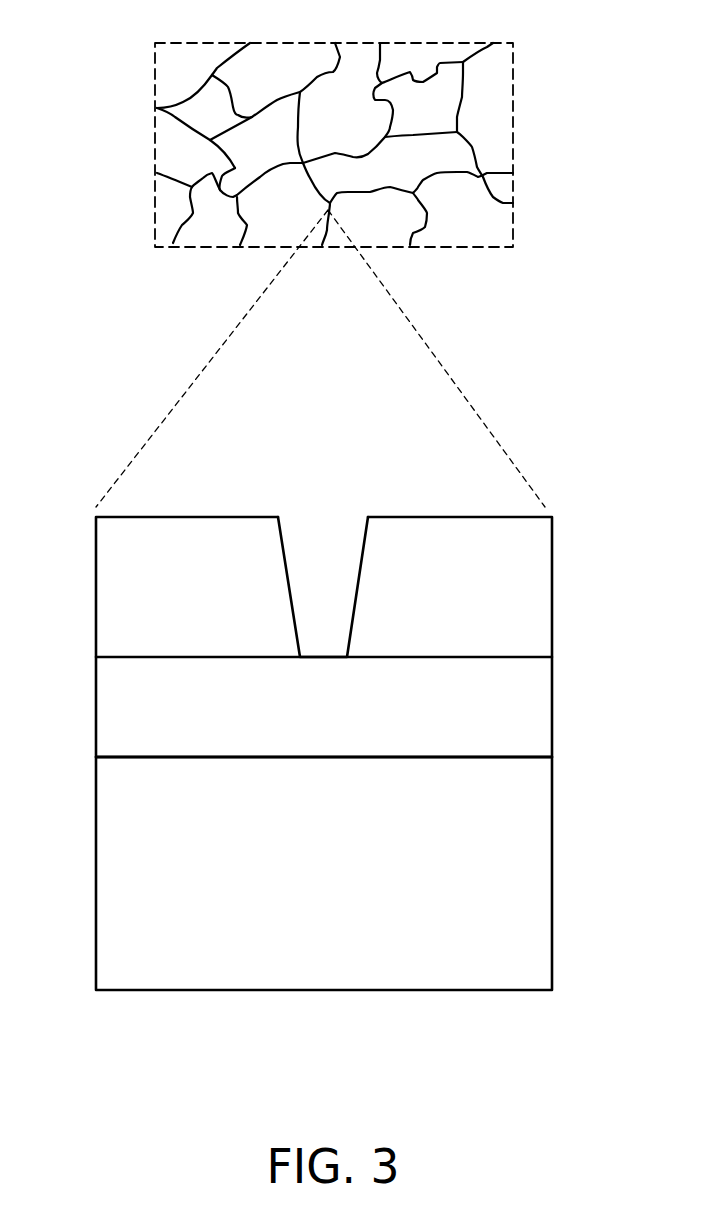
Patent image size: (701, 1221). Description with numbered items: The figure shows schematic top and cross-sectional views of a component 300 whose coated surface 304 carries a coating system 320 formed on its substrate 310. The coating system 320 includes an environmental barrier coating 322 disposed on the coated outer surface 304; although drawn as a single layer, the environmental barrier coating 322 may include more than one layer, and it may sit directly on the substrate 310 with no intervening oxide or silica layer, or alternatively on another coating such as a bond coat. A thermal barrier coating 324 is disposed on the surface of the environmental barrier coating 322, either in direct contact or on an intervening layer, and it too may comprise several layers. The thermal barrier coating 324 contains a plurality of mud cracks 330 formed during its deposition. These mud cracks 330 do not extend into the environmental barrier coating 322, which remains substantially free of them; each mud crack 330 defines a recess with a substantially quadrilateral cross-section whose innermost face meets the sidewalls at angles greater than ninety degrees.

The component 300 is at (150, 81).
The coated surface 304 is at (137, 757).
The substrate 310 is at (305, 886).
The coating system 320 is at (588, 516).
The environmental barrier coating 322 is at (305, 719).
The thermal barrier coating 324 is at (175, 598).
The mud cracks 330 is at (362, 548).